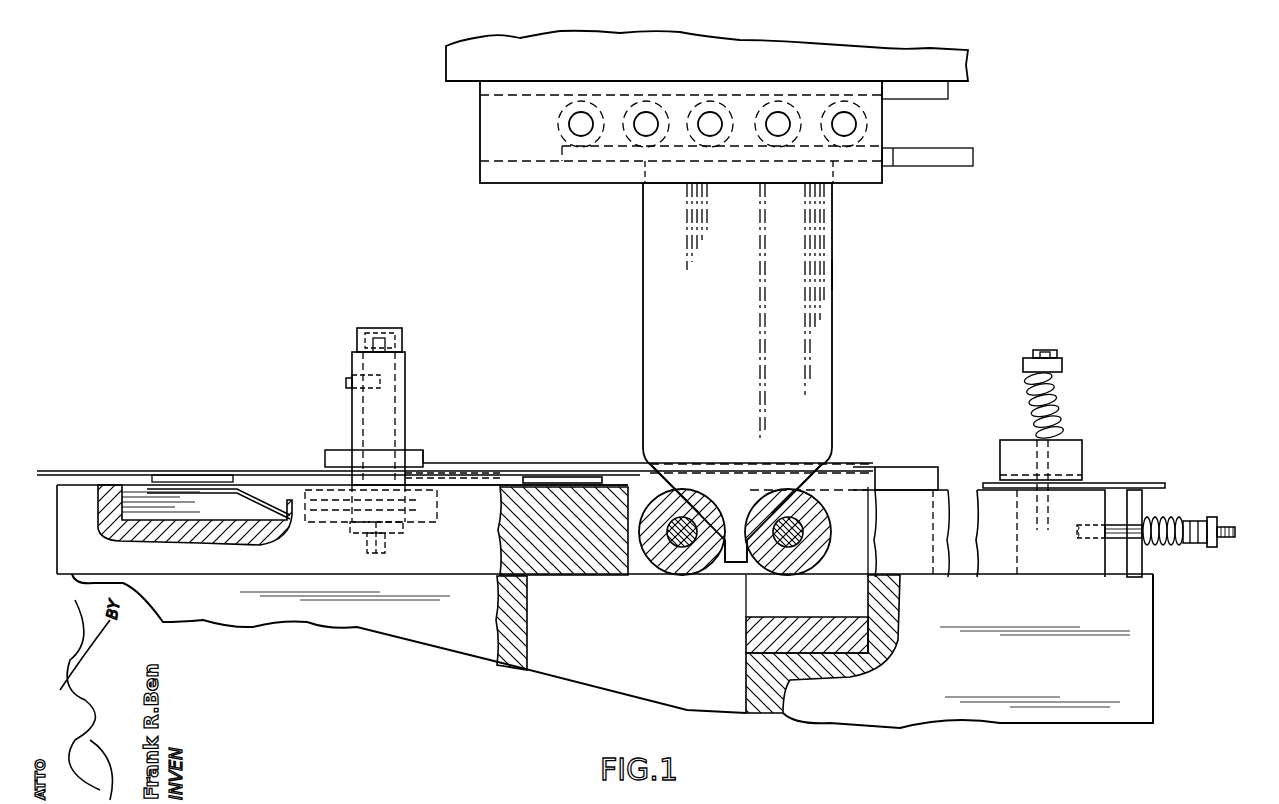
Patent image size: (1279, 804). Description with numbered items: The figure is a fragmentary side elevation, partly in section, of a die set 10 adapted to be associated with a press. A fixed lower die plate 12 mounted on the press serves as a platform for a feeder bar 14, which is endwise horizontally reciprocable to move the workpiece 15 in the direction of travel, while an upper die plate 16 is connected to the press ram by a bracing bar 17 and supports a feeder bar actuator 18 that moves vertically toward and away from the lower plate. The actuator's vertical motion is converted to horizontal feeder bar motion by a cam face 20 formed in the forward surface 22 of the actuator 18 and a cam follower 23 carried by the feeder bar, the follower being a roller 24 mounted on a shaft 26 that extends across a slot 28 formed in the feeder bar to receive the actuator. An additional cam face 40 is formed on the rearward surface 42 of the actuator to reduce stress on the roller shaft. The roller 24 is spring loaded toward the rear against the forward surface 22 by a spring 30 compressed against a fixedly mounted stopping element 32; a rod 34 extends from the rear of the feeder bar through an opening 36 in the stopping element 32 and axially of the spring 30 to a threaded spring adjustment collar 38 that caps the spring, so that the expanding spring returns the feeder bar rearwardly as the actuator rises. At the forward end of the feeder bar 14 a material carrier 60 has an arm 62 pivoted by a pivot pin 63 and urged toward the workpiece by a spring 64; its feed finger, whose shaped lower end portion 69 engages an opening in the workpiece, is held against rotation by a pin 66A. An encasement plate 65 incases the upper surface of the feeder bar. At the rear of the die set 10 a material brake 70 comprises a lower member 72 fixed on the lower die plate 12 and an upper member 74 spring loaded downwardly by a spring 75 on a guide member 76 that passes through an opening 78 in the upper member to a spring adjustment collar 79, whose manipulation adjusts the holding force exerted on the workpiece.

The die set 10 is at (918, 303).
The fixed lower die plate 12 is at (305, 620).
The feeder bar 14 is at (518, 508).
The workpiece 15 is at (155, 470).
The upper die plate 16 is at (452, 49).
The bracing bar 17 is at (483, 135).
The feeder bar actuator 18 is at (820, 345).
The cam face 20 is at (662, 473).
The forward surface 22 is at (643, 306).
The cam follower 23 is at (675, 582).
The roller 24 is at (693, 563).
The shaft 26 is at (698, 547).
The slot 28 is at (640, 567).
The spring 30 is at (1198, 545).
The stopping element 32 is at (1135, 568).
The rod 34 is at (1110, 538).
The opening 36 is at (1150, 540).
The spring adjustment collar 38 is at (1210, 520).
The rearward cam face 40 is at (783, 481).
The rearward surface 42 is at (832, 272).
The material carrier 60 is at (352, 352).
The arm 62 is at (352, 418).
The pivot pin 63 is at (437, 505).
The spring 64 is at (367, 548).
The encasement plate 65 is at (866, 476).
The pin 66A is at (348, 378).
The lower end portion 69 is at (325, 460).
The material brake 70 is at (1073, 410).
The lower member 72 is at (1017, 542).
The upper member 74 is at (1082, 452).
The spring 75 is at (1030, 382).
The guide member 76 is at (1030, 430).
The opening 78 is at (1082, 475).
The spring adjustment collar 79 is at (1052, 360).